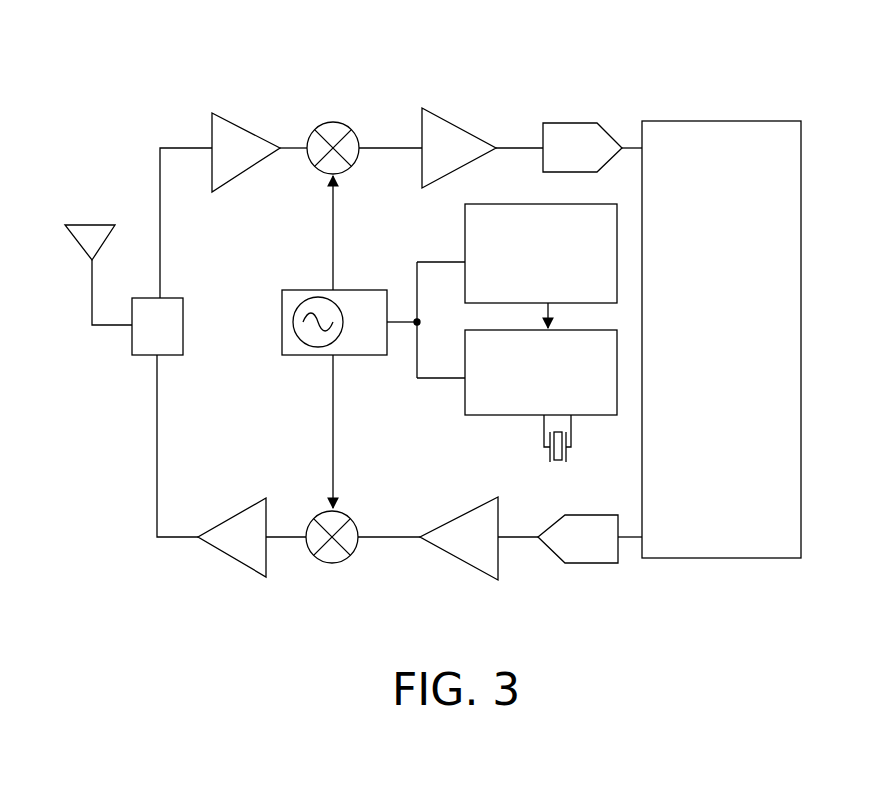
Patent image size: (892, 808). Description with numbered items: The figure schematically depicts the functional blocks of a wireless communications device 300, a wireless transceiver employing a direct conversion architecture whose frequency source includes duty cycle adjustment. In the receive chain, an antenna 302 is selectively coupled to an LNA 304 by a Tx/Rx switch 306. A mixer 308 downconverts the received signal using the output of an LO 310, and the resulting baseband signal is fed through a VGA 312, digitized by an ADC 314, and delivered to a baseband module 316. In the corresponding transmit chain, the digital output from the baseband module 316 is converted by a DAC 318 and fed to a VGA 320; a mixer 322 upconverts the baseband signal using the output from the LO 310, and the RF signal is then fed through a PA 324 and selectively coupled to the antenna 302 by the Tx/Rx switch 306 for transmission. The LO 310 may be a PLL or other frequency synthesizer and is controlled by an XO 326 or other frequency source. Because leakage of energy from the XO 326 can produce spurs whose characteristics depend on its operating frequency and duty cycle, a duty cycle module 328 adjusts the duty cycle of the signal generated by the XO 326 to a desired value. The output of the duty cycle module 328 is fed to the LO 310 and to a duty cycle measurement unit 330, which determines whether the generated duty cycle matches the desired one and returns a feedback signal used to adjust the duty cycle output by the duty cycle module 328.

The wireless communications device 300 is at (166, 74).
The antenna 302 is at (117, 213).
The LNA 304 is at (238, 118).
The Tx/Rx switch 306 is at (185, 337).
The mixer 308 is at (333, 122).
The LO 310 is at (308, 288).
The VGA 312 is at (446, 120).
The ADC 314 is at (572, 122).
The baseband module 316 is at (706, 384).
The DAC 318 is at (600, 565).
The VGA 320 is at (463, 563).
The mixer 322 is at (327, 565).
The PA 324 is at (232, 558).
The XO 326 is at (547, 449).
The duty cycle module 328 is at (465, 400).
The duty cycle measurement unit 330 is at (532, 203).